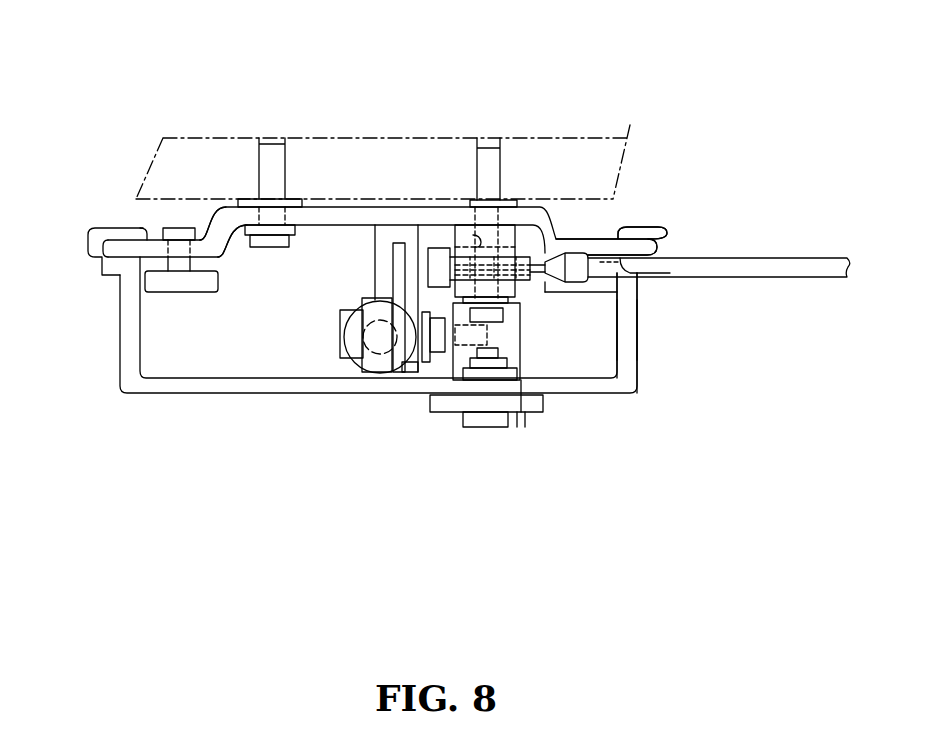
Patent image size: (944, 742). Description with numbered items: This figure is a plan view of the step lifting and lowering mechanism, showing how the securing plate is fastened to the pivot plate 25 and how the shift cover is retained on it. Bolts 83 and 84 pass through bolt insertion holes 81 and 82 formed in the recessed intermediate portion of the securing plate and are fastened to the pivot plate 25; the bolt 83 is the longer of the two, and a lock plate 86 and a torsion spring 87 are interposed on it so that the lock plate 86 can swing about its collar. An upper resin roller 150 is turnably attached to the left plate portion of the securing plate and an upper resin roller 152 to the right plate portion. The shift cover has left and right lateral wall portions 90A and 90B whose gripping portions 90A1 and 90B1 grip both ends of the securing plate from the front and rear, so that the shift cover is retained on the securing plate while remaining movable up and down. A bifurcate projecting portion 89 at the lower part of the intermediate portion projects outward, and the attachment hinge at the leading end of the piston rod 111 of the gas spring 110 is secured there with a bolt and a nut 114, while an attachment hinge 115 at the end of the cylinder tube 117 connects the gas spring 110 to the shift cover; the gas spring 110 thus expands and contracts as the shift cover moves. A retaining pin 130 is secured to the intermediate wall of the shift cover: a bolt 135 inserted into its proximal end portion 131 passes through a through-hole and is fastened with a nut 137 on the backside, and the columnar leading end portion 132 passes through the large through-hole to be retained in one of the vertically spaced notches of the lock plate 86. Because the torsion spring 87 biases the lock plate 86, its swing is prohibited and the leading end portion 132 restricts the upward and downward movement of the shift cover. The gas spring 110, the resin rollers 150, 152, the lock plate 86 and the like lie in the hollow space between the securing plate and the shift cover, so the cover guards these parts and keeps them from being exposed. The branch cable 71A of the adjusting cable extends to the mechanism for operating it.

The pivot plate 25 is at (163, 138).
The branch cable 71A is at (797, 257).
The bolt insertion hole 81 is at (473, 235).
The bolt insertion hole 82 is at (262, 215).
The bolt 83 is at (488, 145).
The bolt 84 is at (273, 138).
The lock plate 86 is at (541, 252).
The torsion spring 87 is at (450, 246).
The projecting portion 89 is at (373, 265).
The lateral wall portion 90A is at (120, 360).
The gripping portion 90A1 is at (89, 245).
The lateral wall portion 90B is at (637, 367).
The gripping portion 90B1 is at (662, 228).
The gas spring 110 is at (372, 342).
The piston rod 111 is at (375, 360).
The nut 114 is at (447, 362).
The attachment hinge 115 is at (375, 372).
The cylinder tube 117 is at (376, 350).
The retaining pin 130 is at (440, 378).
The proximal end portion 131 is at (533, 413).
The leading end portion 132 is at (523, 292).
The bolt 135 is at (475, 428).
The nut 137 is at (520, 413).
The resin roller 150 is at (153, 295).
The resin roller 152 is at (637, 320).